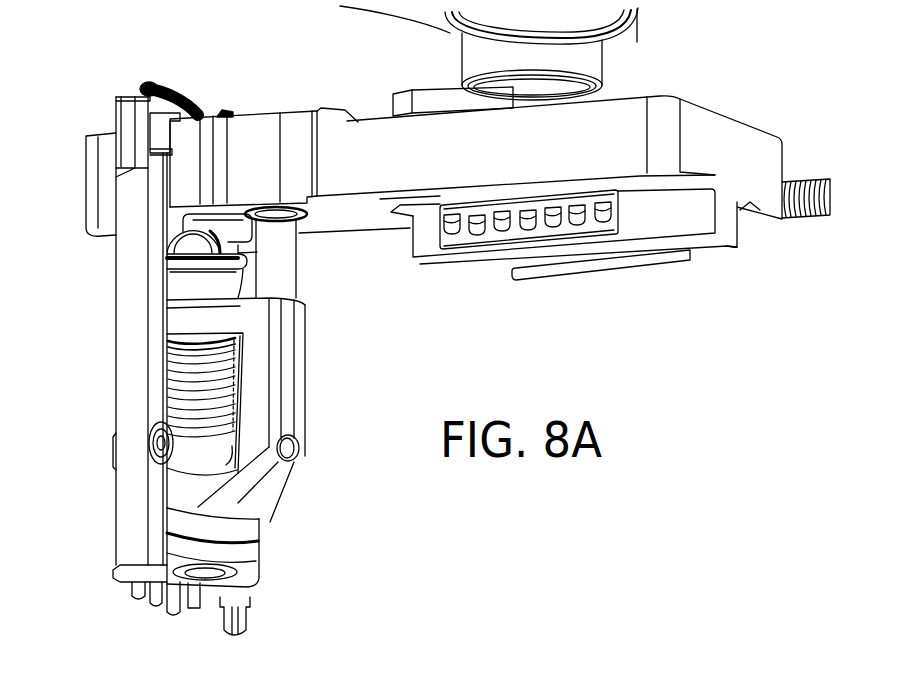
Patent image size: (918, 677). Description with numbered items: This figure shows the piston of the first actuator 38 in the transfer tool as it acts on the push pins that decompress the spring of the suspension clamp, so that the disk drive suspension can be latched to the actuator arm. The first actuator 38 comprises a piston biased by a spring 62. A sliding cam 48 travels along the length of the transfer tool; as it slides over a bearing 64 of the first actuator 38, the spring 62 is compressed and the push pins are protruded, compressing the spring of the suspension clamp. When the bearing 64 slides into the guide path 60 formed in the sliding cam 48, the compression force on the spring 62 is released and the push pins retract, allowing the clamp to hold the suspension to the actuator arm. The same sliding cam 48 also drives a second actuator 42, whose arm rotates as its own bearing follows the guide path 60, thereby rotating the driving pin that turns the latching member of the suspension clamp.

The first actuator 38 is at (218, 282).
The second actuator 42 is at (290, 376).
The sliding cam 48 is at (715, 112).
The guide path 60 is at (228, 225).
The spring 62 is at (193, 378).
The bearing 64 is at (200, 238).